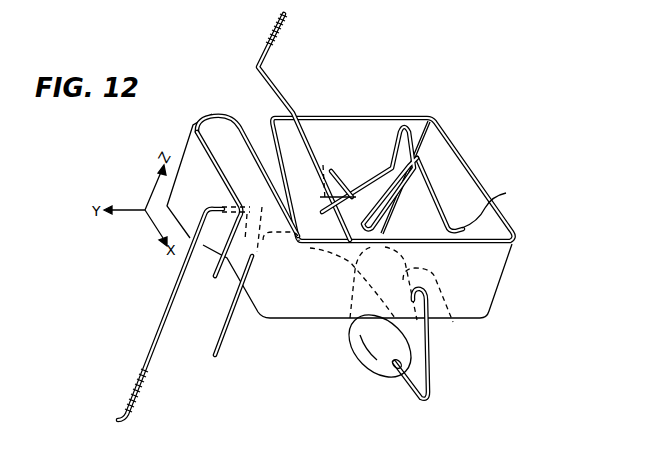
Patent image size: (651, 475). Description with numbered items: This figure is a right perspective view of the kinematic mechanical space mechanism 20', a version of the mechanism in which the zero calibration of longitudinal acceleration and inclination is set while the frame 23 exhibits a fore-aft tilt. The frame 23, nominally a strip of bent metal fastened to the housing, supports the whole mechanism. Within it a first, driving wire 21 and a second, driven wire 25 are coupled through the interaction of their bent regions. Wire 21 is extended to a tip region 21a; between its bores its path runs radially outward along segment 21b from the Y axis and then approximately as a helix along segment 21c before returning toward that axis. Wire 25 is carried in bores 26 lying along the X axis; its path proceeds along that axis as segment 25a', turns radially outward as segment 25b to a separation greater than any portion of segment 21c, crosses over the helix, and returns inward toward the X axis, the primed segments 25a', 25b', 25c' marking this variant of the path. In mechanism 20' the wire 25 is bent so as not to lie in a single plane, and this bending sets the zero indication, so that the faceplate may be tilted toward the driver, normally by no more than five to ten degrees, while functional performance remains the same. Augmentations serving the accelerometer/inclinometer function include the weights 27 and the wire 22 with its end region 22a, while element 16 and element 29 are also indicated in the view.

The sensor element 16 is at (328, 197).
The kinematic space mechanism 20' is at (542, 153).
The wire 21 is at (286, 14).
The tip region 21a is at (268, 34).
The segment 21b is at (436, 212).
The segment 21c is at (345, 170).
The wire 22 is at (119, 421).
The threaded end of second wire 22a is at (145, 388).
The frame 23 is at (506, 272).
The wire 25 is at (432, 372).
The wire segment 25a' is at (373, 134).
The wire segment 25b' is at (394, 131).
The wire segment 25b is at (463, 328).
The third loop of third wire 25c' is at (449, 145).
The bores 26 is at (429, 332).
The weights 27 is at (364, 352).
The hook end 29 is at (482, 207).